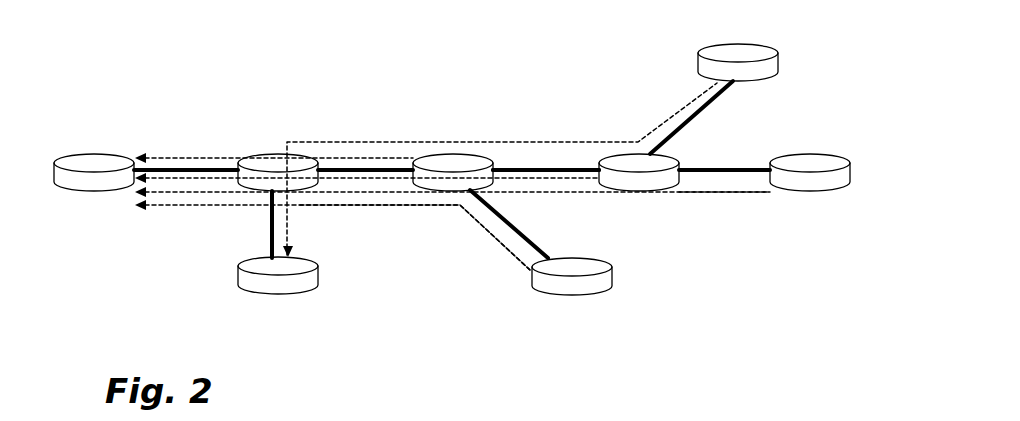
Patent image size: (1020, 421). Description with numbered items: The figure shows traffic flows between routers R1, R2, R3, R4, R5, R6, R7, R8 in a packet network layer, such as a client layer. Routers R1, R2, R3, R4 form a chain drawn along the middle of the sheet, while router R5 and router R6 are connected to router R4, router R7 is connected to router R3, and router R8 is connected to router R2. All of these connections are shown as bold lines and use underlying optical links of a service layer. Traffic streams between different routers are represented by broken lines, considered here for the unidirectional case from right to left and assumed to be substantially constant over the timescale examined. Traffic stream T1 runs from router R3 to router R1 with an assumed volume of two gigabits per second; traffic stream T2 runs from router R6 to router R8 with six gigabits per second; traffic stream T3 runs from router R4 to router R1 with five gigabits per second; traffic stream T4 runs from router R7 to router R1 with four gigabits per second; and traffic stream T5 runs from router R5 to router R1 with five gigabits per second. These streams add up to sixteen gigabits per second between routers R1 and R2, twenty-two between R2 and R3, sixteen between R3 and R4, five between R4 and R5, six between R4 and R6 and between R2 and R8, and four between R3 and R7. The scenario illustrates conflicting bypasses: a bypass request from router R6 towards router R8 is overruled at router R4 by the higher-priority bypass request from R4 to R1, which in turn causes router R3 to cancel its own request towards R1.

The router R1 is at (93, 192).
The router R2 is at (298, 187).
The router R3 is at (455, 160).
The router R4 is at (628, 192).
The router R5 is at (820, 192).
The router R6 is at (752, 82).
The router R7 is at (588, 297).
The router R8 is at (265, 297).
The traffic stream T1 is at (173, 180).
The traffic stream T2 is at (350, 141).
The traffic stream T3 is at (545, 182).
The traffic stream T4 is at (420, 204).
The traffic stream T5 is at (715, 192).